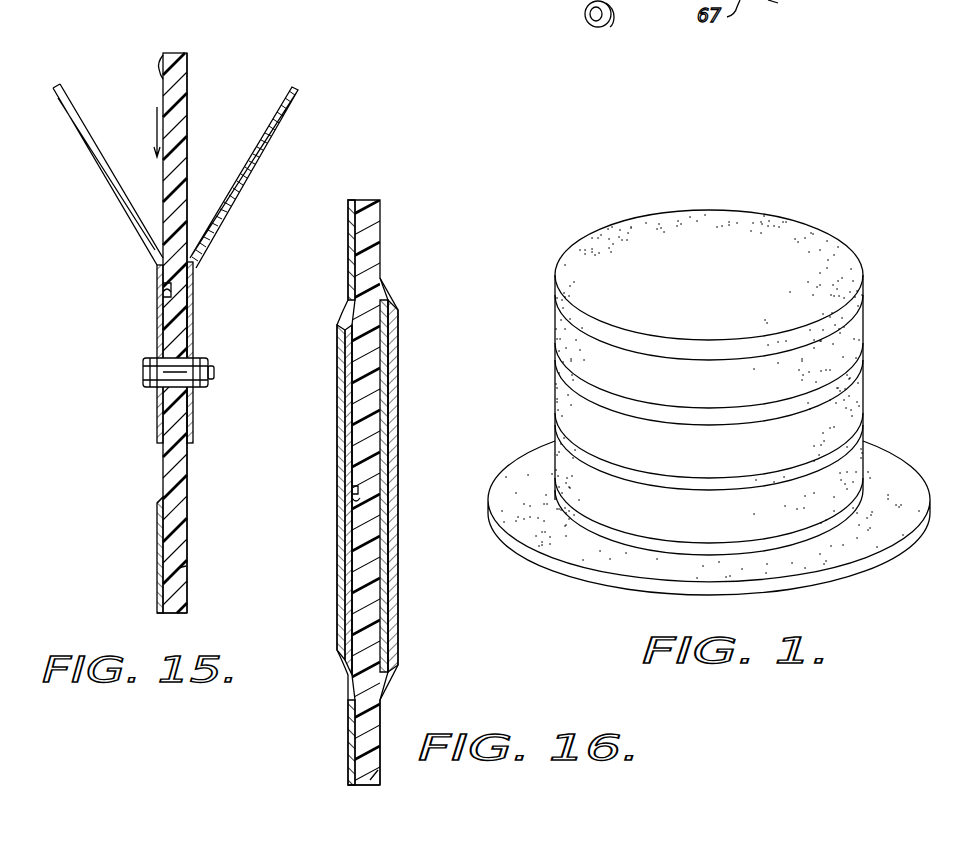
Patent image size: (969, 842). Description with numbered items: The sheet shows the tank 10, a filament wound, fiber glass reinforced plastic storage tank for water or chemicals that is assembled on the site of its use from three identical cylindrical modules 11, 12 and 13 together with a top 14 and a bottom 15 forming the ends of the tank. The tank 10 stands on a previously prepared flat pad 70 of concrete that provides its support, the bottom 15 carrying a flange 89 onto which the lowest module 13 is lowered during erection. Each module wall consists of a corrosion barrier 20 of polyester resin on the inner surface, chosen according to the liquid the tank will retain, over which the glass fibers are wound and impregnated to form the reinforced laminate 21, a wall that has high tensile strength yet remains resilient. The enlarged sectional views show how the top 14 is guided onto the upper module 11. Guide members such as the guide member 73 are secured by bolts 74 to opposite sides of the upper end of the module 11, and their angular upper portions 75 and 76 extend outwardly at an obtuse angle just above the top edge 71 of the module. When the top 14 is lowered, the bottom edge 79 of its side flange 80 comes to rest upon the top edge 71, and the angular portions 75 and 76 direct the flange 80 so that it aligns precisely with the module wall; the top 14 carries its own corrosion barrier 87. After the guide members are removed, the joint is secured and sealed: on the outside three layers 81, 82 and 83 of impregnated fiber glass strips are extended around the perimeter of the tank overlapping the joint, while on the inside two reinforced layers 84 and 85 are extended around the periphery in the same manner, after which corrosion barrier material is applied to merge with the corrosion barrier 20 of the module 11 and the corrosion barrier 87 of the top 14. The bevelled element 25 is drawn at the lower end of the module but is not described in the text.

In FIG. 1, the tank 10 is at (884, 341).
In FIG. 15, the upper cylindrical module 11 is at (143, 514).
In FIG. 16, the upper cylindrical module 11 is at (393, 718).
In FIG. 1, the upper cylindrical module 11 is at (556, 341).
In FIG. 1, the cylindrical module 12 is at (556, 404).
In FIG. 1, the cylindrical module 13 is at (550, 470).
In FIG. 15, the top 14 is at (192, 66).
In FIG. 16, the top 14 is at (393, 240).
In FIG. 1, the top 14 is at (802, 226).
In FIG. 1, the bottom 15 is at (630, 556).
In FIG. 15, the corrosion barrier 20 is at (158, 594).
In FIG. 16, the corrosion barrier 20 is at (350, 768).
In FIG. 15, the reinforced laminate 21 is at (178, 570).
In FIG. 16, the reinforced laminate 21 is at (376, 772).
In FIG. 15, the bevelled edge 25 is at (188, 530).
In FIG. 1, the flat pad 70 is at (545, 552).
In FIG. 15, the top edge of the module 71 is at (196, 286).
In FIG. 16, the top edge of the module 71 is at (353, 490).
In FIG. 15, the guide member 73 is at (156, 320).
In FIG. 15, the bolts 74 is at (195, 318).
In FIG. 15, the angular upper portion 75 is at (236, 207).
In FIG. 15, the angular upper portion 76 is at (112, 208).
In FIG. 15, the bottom edge of the side flange 79 is at (166, 295).
In FIG. 16, the bottom edge of the side flange 79 is at (356, 500).
In FIG. 15, the side flange 80 is at (188, 120).
In FIG. 16, the side flange 80 is at (375, 214).
In FIG. 1, the side flange 80 is at (572, 306).
In FIG. 16, the outer layer of impregnated fiber glass strip 81 is at (382, 392).
In FIG. 16, the outer layer of impregnated fiber glass strip 82 is at (386, 412).
In FIG. 16, the outer layer of impregnated fiber glass strip 83 is at (393, 440).
In FIG. 16, the inner reinforced layer 84 is at (352, 448).
In FIG. 16, the inner reinforced layer 85 is at (345, 420).
In FIG. 15, the corrosion barrier of the top 87 is at (161, 60).
In FIG. 16, the corrosion barrier of the top 87 is at (348, 227).
In FIG. 1, the corrosion barrier of the top 87 is at (560, 315).
In FIG. 1, the flange of the bottom section 89 is at (670, 560).